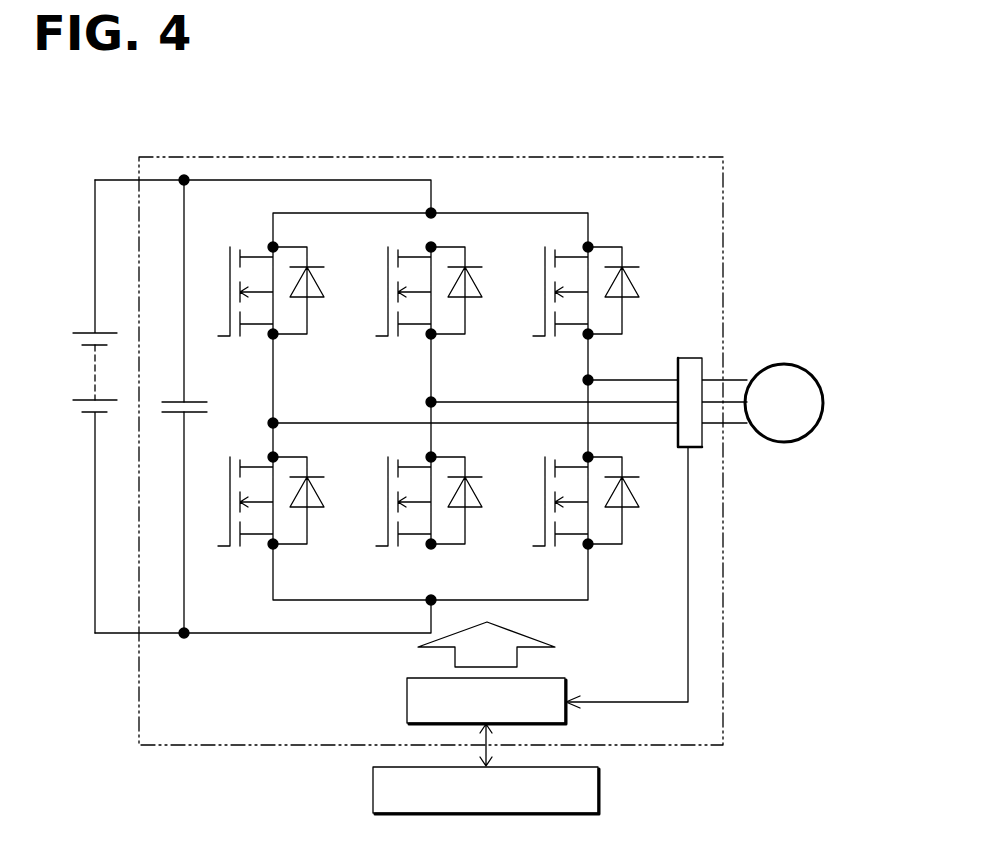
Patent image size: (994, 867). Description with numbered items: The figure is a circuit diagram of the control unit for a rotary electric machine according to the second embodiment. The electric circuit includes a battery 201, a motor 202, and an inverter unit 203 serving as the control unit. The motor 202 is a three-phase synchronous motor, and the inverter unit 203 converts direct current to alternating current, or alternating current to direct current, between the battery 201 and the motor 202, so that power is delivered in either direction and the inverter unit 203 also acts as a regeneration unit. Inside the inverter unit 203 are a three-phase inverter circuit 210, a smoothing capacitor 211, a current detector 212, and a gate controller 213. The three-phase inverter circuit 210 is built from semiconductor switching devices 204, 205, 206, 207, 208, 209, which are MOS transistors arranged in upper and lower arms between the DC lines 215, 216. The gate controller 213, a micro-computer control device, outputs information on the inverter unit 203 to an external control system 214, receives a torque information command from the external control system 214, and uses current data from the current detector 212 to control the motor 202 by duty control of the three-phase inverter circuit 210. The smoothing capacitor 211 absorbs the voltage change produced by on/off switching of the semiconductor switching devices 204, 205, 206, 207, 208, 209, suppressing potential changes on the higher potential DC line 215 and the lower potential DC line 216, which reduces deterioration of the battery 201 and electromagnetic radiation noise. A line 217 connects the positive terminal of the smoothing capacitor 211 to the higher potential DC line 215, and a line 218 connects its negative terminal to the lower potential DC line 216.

The battery 201 is at (82, 407).
The motor 202 is at (785, 443).
The inverter unit 203 is at (723, 253).
The semiconductor switching device 204 is at (235, 337).
The semiconductor switching device 205 is at (235, 547).
The semiconductor switching device 206 is at (393, 337).
The semiconductor switching device 207 is at (393, 547).
The semiconductor switching device 208 is at (550, 337).
The semiconductor switching device 209 is at (550, 547).
The three-phase inverter circuit 210 is at (566, 205).
The smoothing capacitor 211 is at (160, 405).
The current detector 212 is at (683, 352).
The gate controller 213 is at (407, 693).
The external control system 214 is at (598, 790).
The higher potential DC line 215 is at (232, 158).
The lower potential DC line 216 is at (260, 634).
The line 217 is at (184, 261).
The line 218 is at (184, 483).